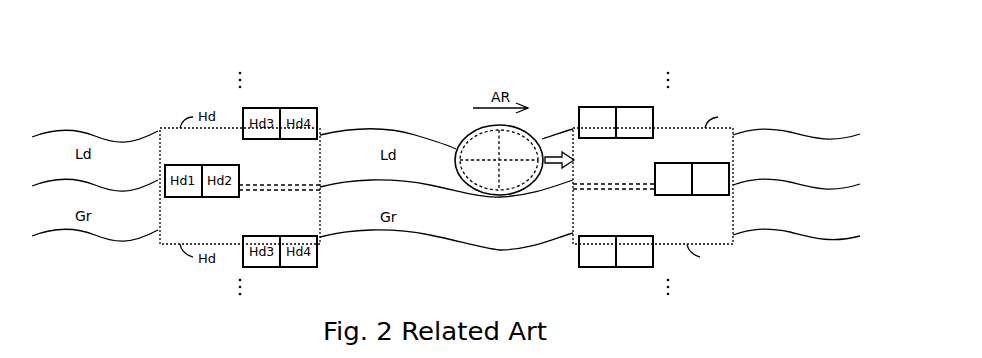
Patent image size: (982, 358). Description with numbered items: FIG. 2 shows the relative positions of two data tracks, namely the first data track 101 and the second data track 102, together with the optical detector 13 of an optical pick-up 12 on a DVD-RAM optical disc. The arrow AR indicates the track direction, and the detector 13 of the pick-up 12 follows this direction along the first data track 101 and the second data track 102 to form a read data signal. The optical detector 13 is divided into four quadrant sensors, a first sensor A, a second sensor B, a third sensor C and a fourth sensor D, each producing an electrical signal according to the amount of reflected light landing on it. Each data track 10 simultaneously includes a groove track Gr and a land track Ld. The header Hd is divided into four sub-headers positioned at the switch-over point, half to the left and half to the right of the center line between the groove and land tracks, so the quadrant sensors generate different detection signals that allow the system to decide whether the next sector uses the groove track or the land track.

The data track 10 is at (738, 60).
The optical pick-up 12 is at (462, 139).
The optical detector 13 is at (484, 126).
The first data track 101 is at (876, 161).
The second data track 102 is at (875, 236).